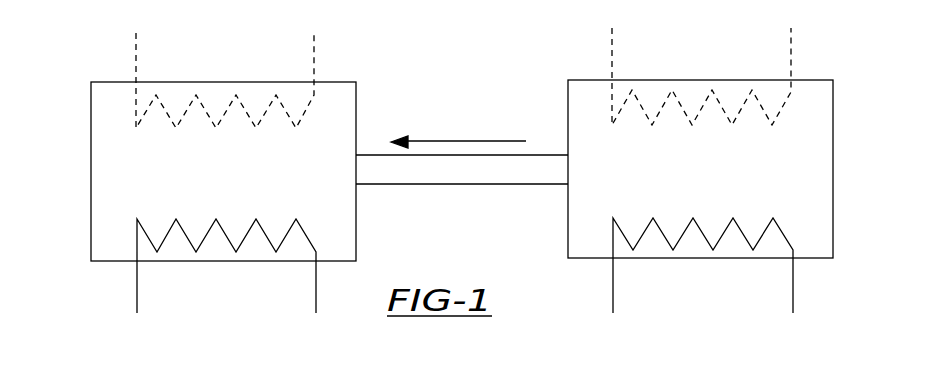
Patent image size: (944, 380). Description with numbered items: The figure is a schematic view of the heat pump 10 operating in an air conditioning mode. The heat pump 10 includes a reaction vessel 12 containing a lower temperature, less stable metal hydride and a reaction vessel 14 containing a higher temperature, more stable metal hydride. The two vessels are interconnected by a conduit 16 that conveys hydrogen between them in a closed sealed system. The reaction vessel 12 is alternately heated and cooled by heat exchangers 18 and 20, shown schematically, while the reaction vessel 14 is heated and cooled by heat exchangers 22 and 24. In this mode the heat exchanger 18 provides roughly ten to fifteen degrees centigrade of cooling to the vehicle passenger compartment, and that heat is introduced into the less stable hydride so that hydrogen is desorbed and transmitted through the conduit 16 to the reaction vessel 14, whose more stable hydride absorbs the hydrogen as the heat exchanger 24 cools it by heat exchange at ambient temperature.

The heat pump 10 is at (470, 170).
The reaction vessel 12 is at (726, 174).
The reaction vessel 14 is at (205, 176).
The conduit 16 is at (493, 186).
The heat exchanger 18 is at (792, 275).
The heat exchanger 20 is at (614, 44).
The heat exchanger 22 is at (137, 58).
The heat exchanger 24 is at (137, 283).